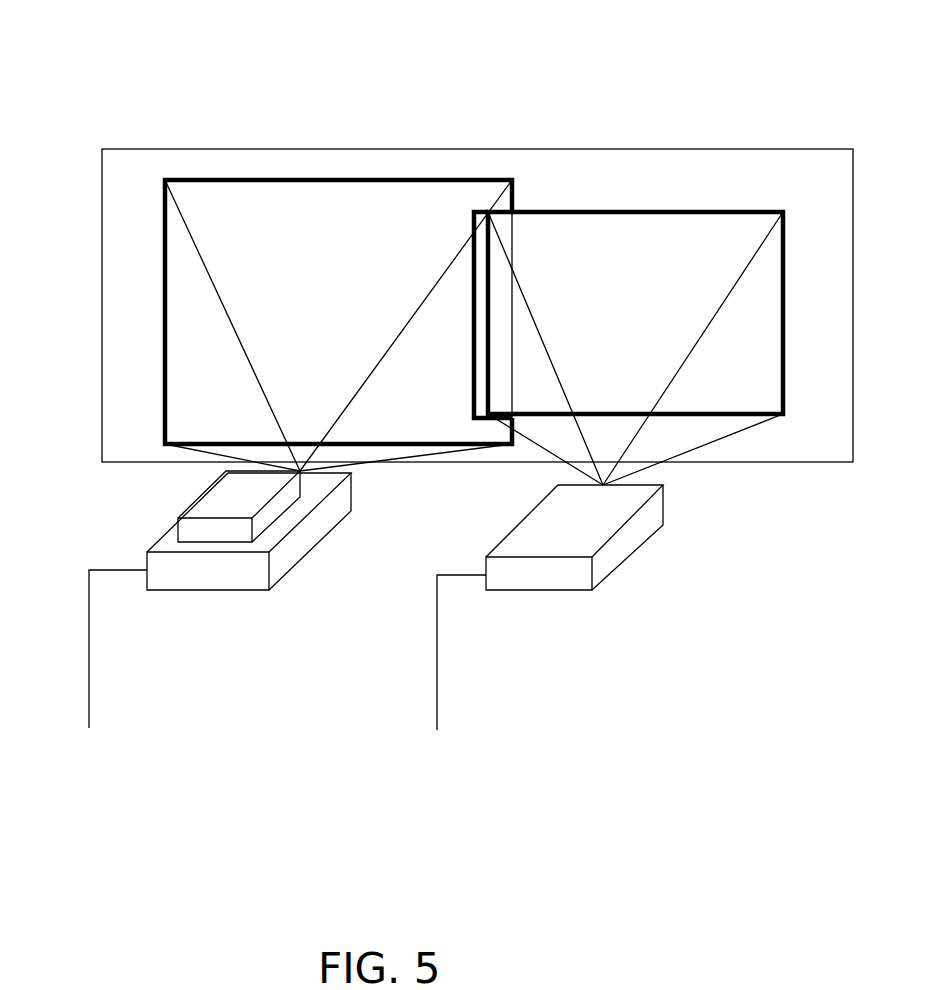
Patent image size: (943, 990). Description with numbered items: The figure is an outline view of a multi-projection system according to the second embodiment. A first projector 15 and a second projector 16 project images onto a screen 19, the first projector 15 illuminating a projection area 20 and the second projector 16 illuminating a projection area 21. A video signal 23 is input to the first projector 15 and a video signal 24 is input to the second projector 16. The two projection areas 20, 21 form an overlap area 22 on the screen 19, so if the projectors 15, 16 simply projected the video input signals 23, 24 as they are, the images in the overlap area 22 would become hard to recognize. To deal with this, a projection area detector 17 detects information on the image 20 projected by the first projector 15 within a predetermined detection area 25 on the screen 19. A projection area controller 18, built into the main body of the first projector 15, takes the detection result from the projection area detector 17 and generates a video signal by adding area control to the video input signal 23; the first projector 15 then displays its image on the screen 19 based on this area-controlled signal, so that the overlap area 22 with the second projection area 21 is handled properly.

The first projector 15 is at (195, 561).
The second projector 16 is at (560, 572).
The projection area detector 17 is at (180, 518).
The projection area controller 18 is at (147, 552).
The screen 19 is at (128, 124).
The projection area 20 is at (180, 245).
The projection area 21 is at (660, 273).
The overlap area 22 is at (491, 210).
The video signal 23 is at (90, 660).
The video signal 24 is at (437, 665).
The detection area 25 is at (101, 367).